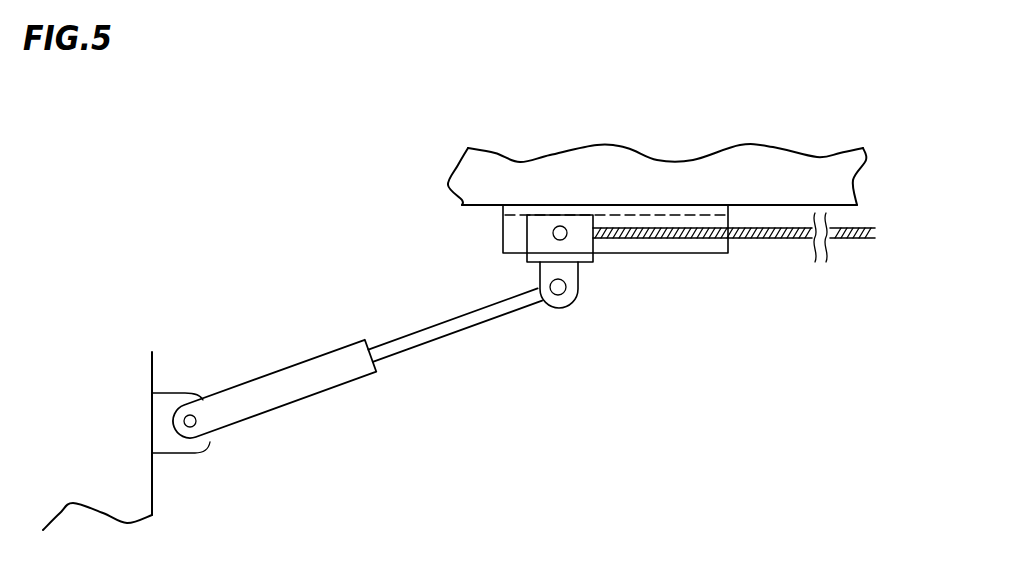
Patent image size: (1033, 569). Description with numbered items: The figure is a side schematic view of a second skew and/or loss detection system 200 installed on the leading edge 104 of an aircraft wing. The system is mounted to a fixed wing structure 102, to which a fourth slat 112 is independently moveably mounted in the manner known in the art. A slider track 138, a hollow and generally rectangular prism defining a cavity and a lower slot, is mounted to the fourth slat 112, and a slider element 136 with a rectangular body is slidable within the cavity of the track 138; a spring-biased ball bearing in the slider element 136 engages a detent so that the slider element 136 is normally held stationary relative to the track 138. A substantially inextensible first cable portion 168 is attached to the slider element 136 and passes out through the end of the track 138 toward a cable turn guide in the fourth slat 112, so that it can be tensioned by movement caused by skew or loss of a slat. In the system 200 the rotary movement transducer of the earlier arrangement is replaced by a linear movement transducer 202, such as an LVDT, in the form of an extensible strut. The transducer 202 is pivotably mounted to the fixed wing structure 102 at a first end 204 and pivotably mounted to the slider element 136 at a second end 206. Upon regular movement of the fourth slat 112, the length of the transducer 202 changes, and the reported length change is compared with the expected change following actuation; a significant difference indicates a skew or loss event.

The second skew and/or loss detection system 200 is at (358, 115).
The fourth slat 112 is at (657, 167).
The slider track 138 is at (692, 252).
The slider element 136 is at (587, 263).
The first cable portion 168 is at (787, 238).
The leading edge 104 is at (153, 370).
The fixed wing structure 102 is at (110, 421).
The linear movement transducer 202 is at (300, 382).
The first end 204 is at (195, 422).
The second end 206 is at (533, 297).